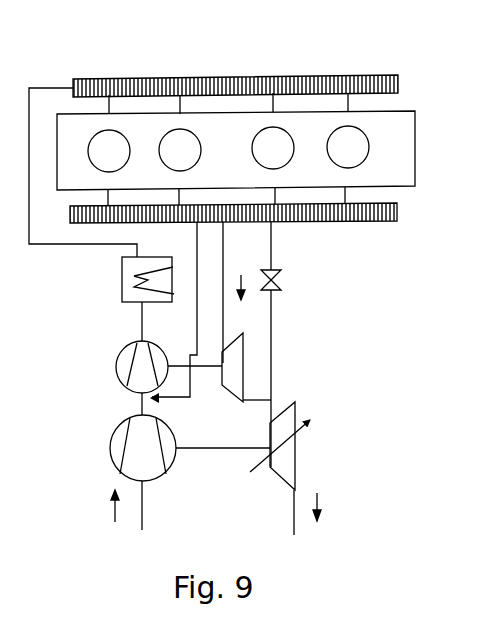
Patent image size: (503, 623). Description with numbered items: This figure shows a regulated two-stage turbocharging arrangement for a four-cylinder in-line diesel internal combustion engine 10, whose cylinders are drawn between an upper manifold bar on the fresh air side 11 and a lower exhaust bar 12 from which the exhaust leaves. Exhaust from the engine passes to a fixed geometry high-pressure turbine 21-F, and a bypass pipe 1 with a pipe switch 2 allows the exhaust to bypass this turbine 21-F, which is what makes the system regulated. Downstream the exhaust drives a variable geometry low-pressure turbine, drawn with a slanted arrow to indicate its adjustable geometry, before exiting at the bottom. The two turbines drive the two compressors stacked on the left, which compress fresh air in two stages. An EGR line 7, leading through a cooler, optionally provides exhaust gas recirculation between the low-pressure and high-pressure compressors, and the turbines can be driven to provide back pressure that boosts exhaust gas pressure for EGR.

The internal combustion engine 10 is at (405, 44).
The fresh air side 11 is at (330, 80).
The exhaust manifold 12 is at (372, 222).
The EGR line 7 is at (190, 314).
The HP turbine 21-F is at (243, 357).
The bypass pipe 1 is at (277, 250).
The pipe switch 2 is at (282, 278).